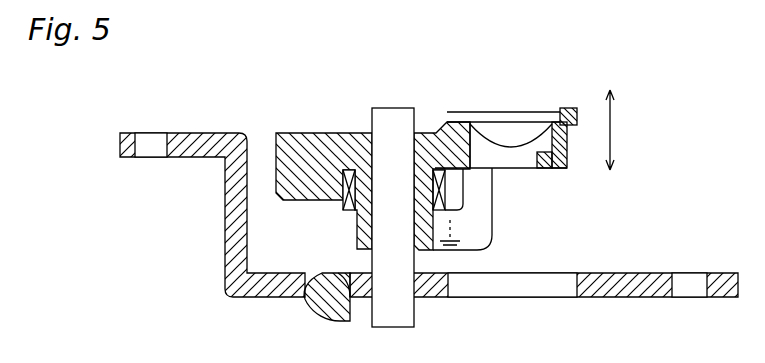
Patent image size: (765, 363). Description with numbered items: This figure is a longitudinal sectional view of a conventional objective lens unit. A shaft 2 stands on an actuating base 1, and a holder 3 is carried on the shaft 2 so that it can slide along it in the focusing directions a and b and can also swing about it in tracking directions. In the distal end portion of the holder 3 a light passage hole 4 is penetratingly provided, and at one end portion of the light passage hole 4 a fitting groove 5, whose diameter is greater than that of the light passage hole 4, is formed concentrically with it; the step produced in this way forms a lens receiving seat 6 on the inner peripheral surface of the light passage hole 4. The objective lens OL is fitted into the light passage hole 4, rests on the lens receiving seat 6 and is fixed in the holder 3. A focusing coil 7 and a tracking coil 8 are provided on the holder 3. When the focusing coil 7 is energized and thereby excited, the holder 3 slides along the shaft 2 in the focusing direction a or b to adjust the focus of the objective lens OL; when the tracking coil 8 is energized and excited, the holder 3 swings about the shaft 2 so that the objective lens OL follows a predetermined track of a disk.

The actuating base 1 is at (610, 284).
The shaft 2 is at (393, 118).
The holder 3 is at (316, 130).
The light passage hole 4 is at (541, 167).
The fitting groove 5 is at (554, 112).
The lens receiving seat 6 is at (465, 118).
The focusing coil 7 is at (347, 212).
The tracking coil 8 is at (480, 202).
The objective lens OL is at (511, 128).
The focusing direction a is at (608, 115).
The focusing direction b is at (608, 191).